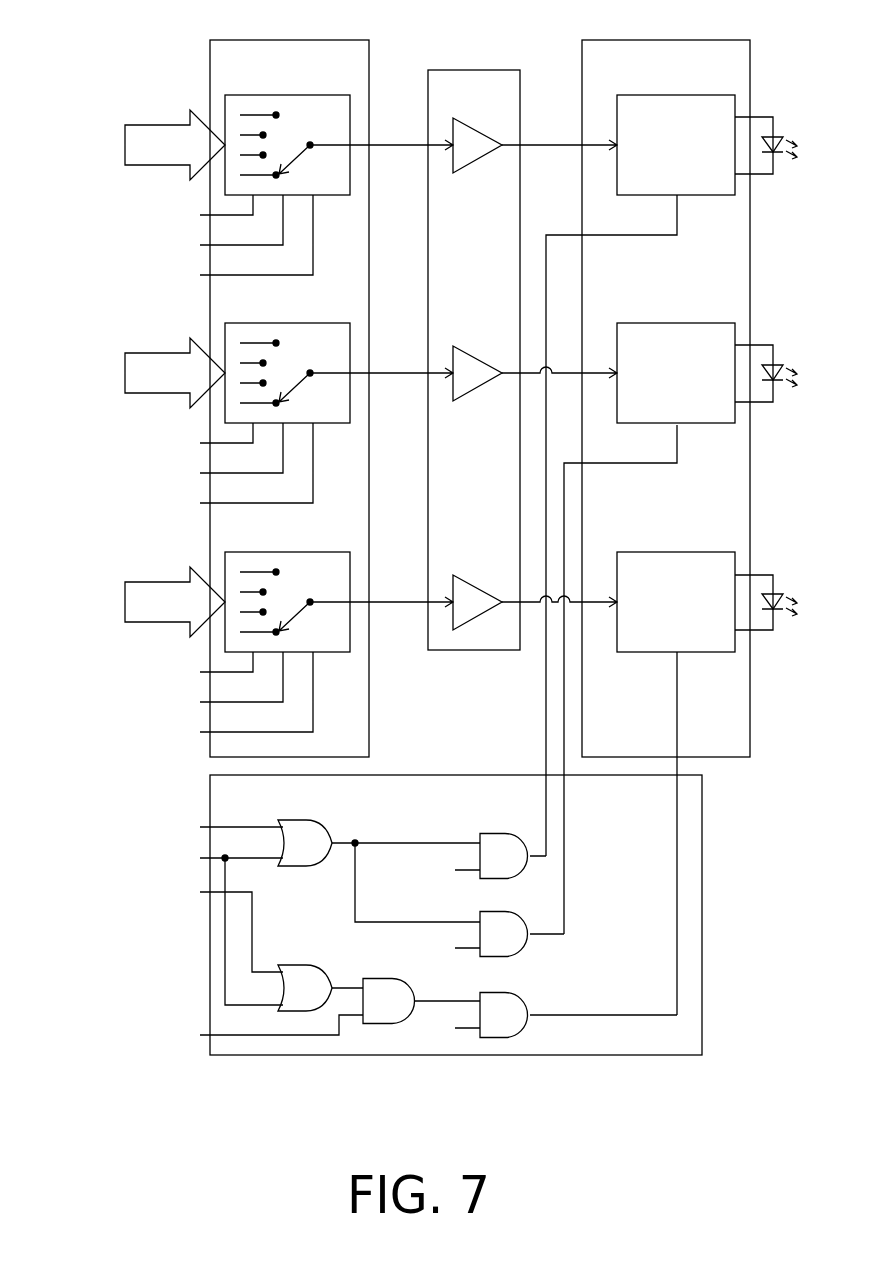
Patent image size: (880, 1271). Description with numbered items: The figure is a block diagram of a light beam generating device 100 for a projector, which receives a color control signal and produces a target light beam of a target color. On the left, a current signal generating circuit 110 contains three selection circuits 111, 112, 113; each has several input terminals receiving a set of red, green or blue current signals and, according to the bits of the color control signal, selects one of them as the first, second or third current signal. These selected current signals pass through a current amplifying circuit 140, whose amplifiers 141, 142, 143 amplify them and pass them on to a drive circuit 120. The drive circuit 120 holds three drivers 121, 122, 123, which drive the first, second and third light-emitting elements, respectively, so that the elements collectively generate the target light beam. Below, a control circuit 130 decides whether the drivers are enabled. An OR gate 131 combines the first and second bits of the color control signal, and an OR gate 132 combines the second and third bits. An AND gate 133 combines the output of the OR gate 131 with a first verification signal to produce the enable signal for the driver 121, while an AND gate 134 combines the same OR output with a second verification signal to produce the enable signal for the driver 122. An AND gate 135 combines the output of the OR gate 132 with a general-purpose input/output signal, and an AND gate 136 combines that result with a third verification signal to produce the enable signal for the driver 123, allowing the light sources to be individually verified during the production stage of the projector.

The light beam generating device 100 is at (777, 1087).
The current signal generating circuit 110 is at (315, 37).
The selection circuit 111 is at (288, 93).
The selection circuit 112 is at (288, 322).
The selection circuit 113 is at (288, 548).
The drive circuit 120 is at (697, 37).
The driver 121 is at (675, 93).
The driver 122 is at (675, 322).
The driver 123 is at (675, 550).
The control circuit 130 is at (455, 773).
The OR gate 131 is at (293, 818).
The OR gate 132 is at (292, 960).
The AND gate 133 is at (495, 828).
The AND gate 134 is at (507, 909).
The AND gate 135 is at (382, 975).
The AND gate 136 is at (508, 988).
The current amplifying circuit 140 is at (473, 68).
The amplifier 141 is at (482, 128).
The amplifier 142 is at (482, 356).
The amplifier 143 is at (482, 585).